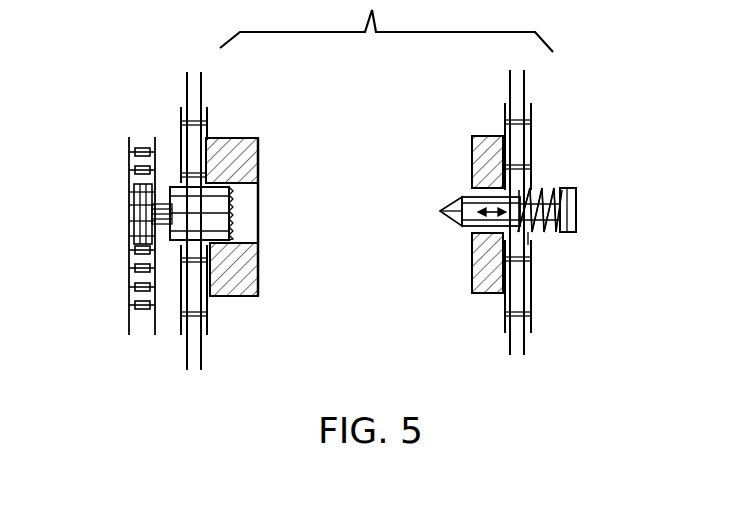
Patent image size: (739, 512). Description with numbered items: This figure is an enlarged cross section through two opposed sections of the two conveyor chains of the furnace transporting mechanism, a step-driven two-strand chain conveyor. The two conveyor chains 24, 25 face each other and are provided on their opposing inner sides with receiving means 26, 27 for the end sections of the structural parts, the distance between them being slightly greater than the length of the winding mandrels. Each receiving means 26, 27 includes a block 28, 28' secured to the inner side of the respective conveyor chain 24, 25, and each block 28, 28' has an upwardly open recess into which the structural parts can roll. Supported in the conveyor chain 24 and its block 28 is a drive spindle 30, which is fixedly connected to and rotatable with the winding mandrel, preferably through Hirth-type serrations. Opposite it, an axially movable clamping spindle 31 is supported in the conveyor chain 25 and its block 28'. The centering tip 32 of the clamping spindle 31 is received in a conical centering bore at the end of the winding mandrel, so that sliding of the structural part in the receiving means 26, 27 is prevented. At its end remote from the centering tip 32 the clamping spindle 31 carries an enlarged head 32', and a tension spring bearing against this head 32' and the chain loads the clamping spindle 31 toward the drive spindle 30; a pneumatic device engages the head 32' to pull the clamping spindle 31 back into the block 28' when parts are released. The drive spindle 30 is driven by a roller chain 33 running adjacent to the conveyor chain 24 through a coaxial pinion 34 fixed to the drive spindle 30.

The conveyor chain 24 is at (203, 347).
The conveyor chain 25 is at (527, 345).
The receiving means 26 is at (254, 114).
The receiving means 27 is at (461, 125).
The block 28 is at (257, 225).
The block 28' is at (470, 299).
The drive spindle 30 is at (208, 228).
The clamping spindle 31 is at (528, 245).
The centering tip 32 is at (476, 238).
The enlarged head 32' is at (594, 188).
The roller chain 33 is at (127, 330).
The sprocket 34 is at (140, 212).